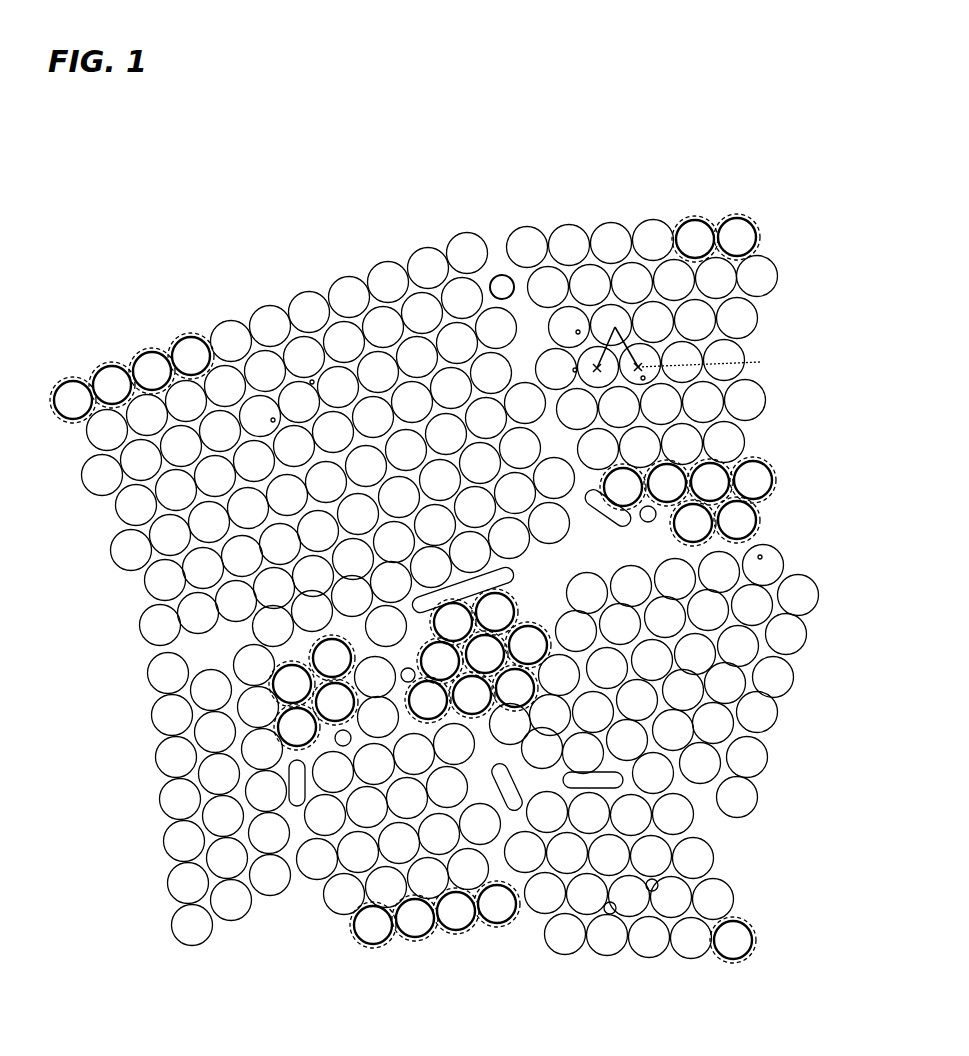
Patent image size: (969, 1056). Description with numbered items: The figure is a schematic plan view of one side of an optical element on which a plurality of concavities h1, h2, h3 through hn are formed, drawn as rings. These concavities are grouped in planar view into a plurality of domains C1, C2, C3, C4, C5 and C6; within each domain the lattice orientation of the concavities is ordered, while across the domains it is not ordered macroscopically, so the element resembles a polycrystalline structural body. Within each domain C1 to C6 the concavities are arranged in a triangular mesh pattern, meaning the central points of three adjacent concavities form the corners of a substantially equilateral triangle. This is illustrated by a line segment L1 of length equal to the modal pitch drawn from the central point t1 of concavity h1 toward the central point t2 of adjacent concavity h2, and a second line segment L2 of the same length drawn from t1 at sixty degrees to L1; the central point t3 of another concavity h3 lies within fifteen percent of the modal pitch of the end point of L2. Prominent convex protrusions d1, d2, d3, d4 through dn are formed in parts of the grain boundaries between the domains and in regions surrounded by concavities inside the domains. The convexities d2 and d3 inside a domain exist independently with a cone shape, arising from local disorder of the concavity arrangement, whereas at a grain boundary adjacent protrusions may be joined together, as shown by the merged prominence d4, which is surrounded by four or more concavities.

The domain C1 is at (247, 307).
The domain C2 is at (760, 226).
The domain C3 is at (165, 922).
The domain C4 is at (817, 594).
The domain C5 is at (458, 935).
The domain C6 is at (757, 957).
The convexity d1 is at (500, 273).
The convexity d2 is at (278, 422).
The convexity d3 is at (313, 382).
The merged prominence d4 is at (298, 812).
The convexity dn is at (653, 892).
The concavity h1 is at (578, 330).
The concavity h2 is at (575, 370).
The concavity h3 is at (643, 377).
The concavity hn is at (760, 557).
The central point t1 is at (615, 327).
The central point t2 is at (596, 340).
The central point t3 is at (760, 362).
The line segment L1 is at (597, 366).
The line segment L2 is at (638, 366).